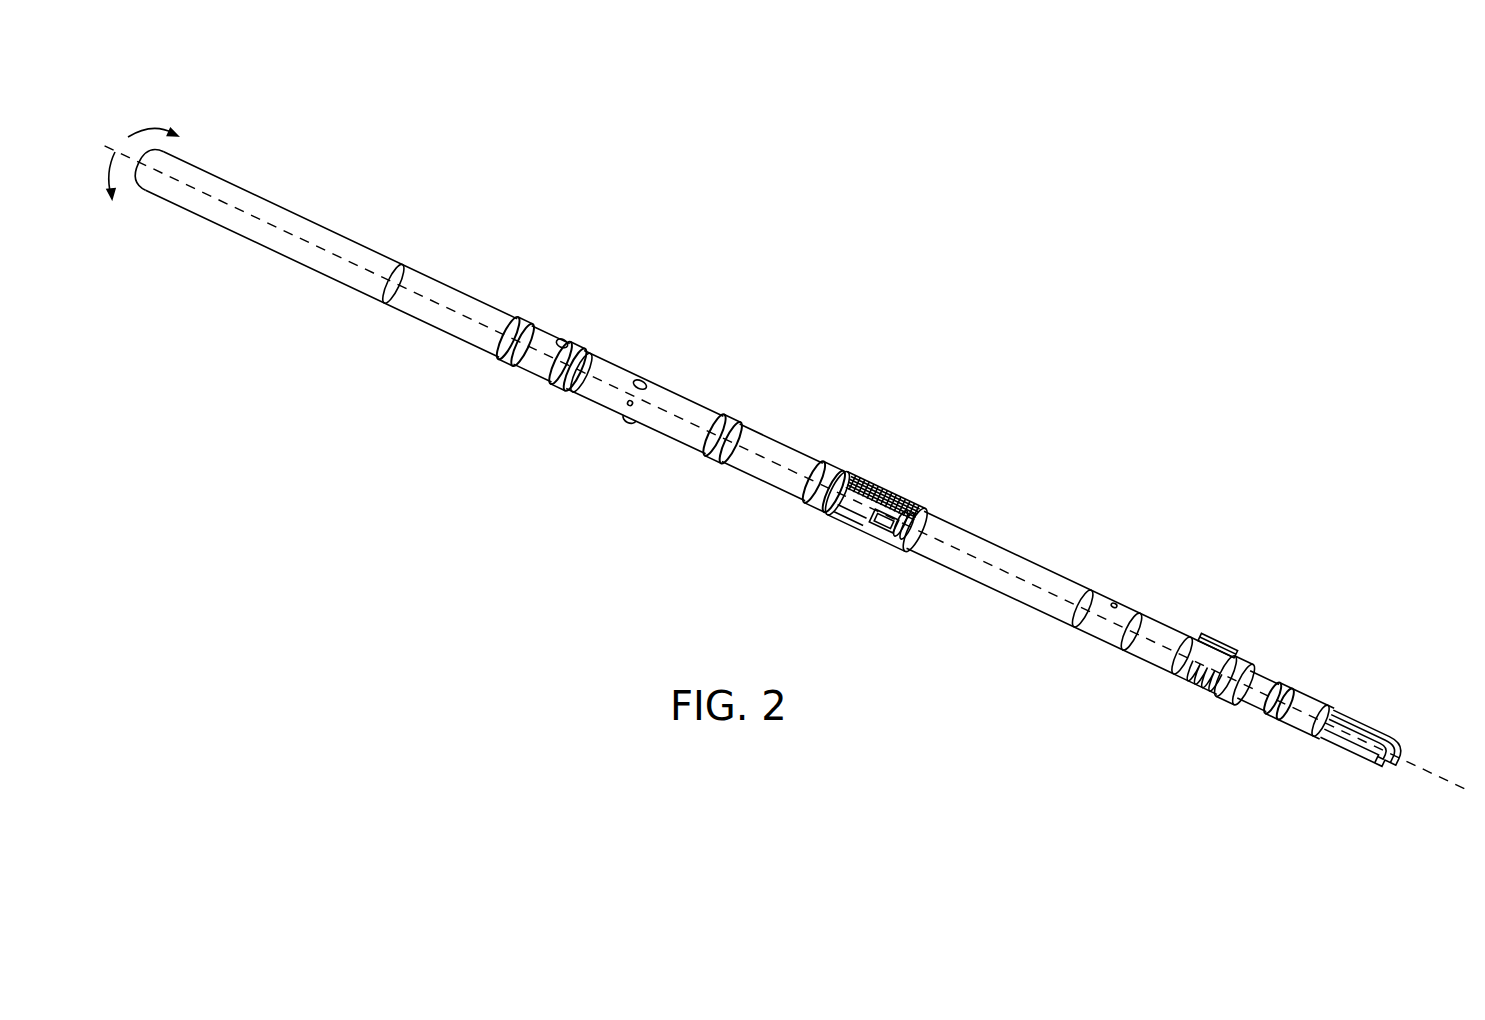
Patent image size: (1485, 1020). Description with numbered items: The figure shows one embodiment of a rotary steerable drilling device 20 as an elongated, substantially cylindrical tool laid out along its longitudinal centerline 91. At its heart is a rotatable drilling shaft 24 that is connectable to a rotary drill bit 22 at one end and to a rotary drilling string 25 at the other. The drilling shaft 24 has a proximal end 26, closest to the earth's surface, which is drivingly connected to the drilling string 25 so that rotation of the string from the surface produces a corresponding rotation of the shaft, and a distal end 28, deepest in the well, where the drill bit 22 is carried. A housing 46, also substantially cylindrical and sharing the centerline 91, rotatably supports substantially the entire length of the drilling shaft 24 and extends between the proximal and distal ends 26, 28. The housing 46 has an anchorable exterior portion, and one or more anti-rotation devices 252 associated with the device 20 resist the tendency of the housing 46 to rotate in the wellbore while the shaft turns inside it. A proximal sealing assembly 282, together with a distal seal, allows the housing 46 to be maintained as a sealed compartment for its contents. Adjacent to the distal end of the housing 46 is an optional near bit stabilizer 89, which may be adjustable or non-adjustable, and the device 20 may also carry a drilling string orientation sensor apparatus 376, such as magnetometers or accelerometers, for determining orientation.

The rotary steerable drilling device 20 is at (826, 392).
The longitudinal centerline 91 is at (136, 160).
The rotary drilling string 25 is at (438, 282).
The proximal end 26 is at (562, 320).
The drilling string orientation sensor apparatus 376 is at (643, 378).
The proximal sealing assembly 282 is at (742, 427).
The housing 46 is at (773, 483).
The anti-rotation device 252 is at (902, 478).
The near bit stabilizer 89 is at (1227, 647).
The distal end 28 is at (1293, 635).
The drilling shaft 24 is at (1280, 707).
The rotary drill bit 22 is at (1398, 750).